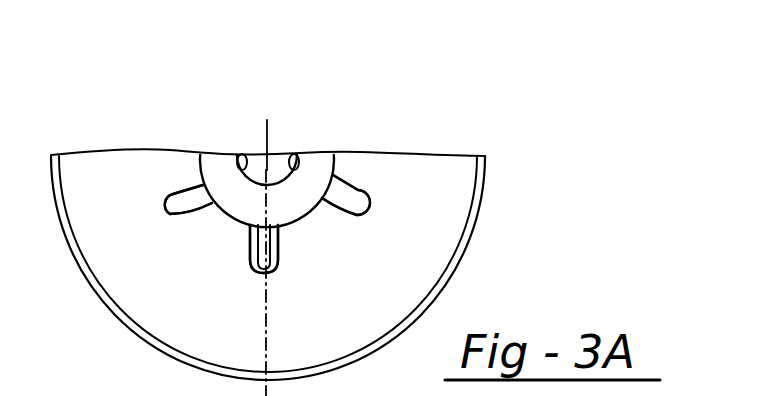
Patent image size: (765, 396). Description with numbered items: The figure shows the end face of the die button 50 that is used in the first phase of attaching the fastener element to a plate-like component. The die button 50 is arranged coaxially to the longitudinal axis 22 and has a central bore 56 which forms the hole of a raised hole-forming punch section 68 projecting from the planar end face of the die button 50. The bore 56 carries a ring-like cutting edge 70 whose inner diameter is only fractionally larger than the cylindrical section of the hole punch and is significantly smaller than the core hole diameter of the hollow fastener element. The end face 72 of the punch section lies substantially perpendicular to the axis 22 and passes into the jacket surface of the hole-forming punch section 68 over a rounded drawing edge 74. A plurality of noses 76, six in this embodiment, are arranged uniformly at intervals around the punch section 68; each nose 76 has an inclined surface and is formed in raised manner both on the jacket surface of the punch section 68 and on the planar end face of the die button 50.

The longitudinal axis 22 is at (263, 141).
The die button 50 is at (72, 227).
The central bore 56 is at (294, 153).
The hole-forming punch section 68 is at (300, 217).
The ring-like cutting edge 70 is at (242, 155).
The end face 72 is at (324, 170).
The rounded drawing edge 74 is at (217, 205).
The noses 76 is at (178, 215).